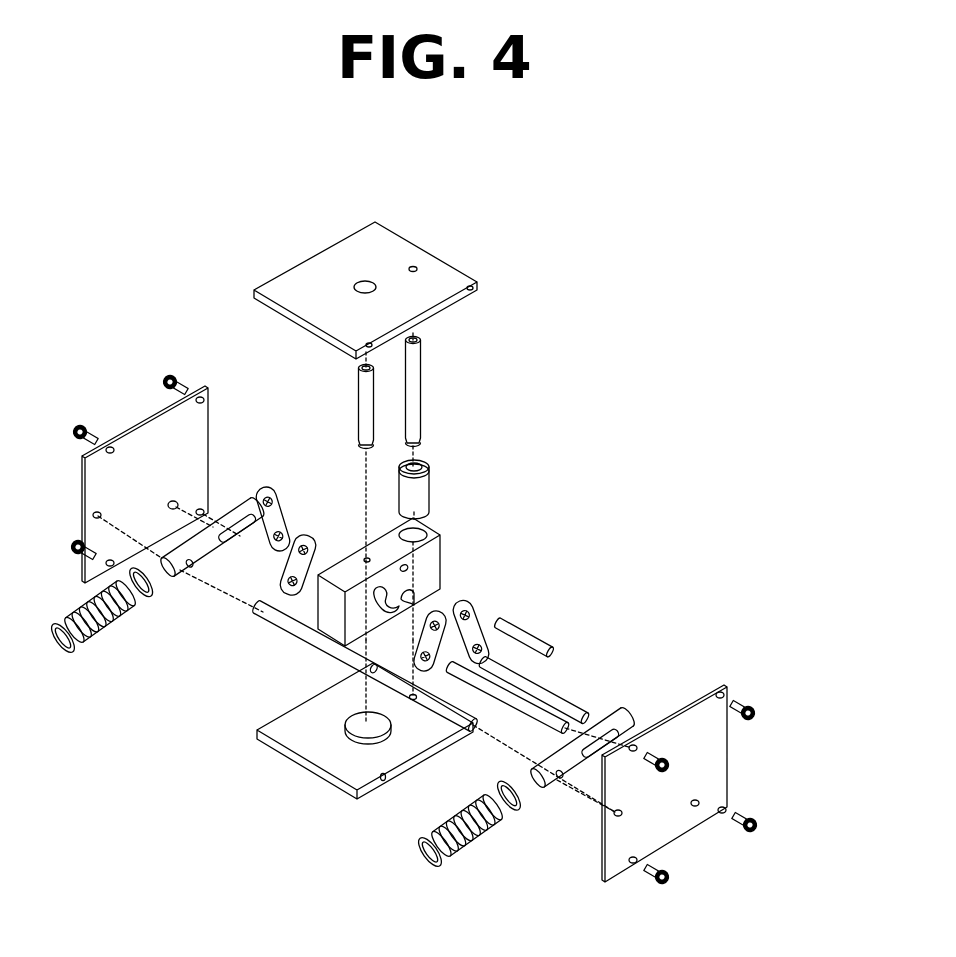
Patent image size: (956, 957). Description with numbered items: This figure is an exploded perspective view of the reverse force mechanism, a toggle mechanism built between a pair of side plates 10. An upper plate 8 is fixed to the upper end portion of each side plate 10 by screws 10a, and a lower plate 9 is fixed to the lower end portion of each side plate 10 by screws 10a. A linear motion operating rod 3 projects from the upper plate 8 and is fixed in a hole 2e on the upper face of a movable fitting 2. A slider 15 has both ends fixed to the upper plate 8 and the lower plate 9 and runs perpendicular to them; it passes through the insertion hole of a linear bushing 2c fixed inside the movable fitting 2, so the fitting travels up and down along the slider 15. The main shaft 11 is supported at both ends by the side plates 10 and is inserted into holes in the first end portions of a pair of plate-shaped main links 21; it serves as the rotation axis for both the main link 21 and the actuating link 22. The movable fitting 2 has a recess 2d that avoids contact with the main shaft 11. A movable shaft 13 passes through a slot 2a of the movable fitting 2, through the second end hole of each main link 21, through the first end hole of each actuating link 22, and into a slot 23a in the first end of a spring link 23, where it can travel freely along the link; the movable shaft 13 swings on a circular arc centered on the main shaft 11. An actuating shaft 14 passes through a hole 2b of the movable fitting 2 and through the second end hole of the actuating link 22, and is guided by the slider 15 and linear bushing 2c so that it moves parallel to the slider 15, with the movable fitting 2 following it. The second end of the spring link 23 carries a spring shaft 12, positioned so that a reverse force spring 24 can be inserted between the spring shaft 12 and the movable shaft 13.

The upper plate 8 is at (442, 262).
The slider 15 is at (422, 360).
The linear motion operating rod 3 is at (421, 425).
The linear bushing 2c is at (430, 482).
The movable fitting 2 is at (443, 547).
The hole 2b is at (443, 593).
The hole 2e is at (275, 495).
The actuating link 22 is at (497, 615).
The recess 2d is at (481, 606).
The actuating shaft 14 is at (540, 637).
The movable shaft 13 is at (590, 712).
The slot 2a is at (310, 628).
The lower plate 9 is at (277, 750).
The main link 21 is at (380, 610).
The main shaft 11 is at (440, 700).
The spring shaft 12 is at (267, 620).
The side plate 10 is at (733, 788).
The screws 10a is at (757, 712).
The spring link 23 is at (532, 782).
The slot 23a is at (593, 753).
The reverse force spring 24 is at (467, 847).